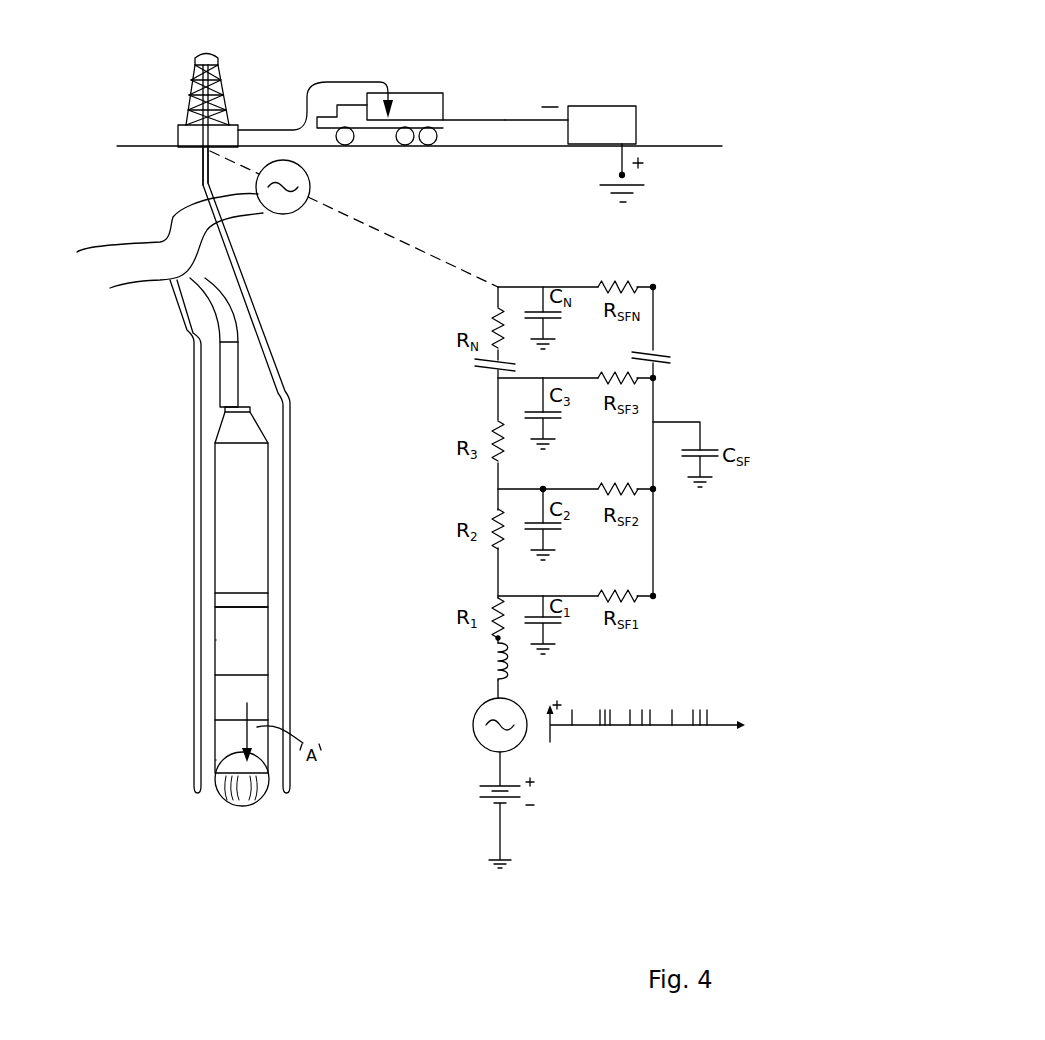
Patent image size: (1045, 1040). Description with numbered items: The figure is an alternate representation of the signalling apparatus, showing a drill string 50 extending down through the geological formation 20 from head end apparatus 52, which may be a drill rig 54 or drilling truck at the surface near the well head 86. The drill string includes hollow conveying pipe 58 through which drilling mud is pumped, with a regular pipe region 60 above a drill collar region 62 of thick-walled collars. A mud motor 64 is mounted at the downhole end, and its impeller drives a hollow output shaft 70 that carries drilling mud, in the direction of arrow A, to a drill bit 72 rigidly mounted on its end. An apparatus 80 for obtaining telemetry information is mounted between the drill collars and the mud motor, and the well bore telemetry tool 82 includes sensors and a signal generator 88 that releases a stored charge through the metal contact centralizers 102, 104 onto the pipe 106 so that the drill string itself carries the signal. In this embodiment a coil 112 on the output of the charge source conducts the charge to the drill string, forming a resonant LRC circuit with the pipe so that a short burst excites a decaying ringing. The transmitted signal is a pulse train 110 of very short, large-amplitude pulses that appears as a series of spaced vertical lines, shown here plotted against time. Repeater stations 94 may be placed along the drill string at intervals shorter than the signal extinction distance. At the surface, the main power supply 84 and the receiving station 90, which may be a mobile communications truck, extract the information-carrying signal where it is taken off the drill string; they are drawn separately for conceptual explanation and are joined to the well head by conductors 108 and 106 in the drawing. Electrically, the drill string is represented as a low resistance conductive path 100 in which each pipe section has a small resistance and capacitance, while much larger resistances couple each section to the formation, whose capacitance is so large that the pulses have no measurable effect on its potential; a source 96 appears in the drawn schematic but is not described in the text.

The geological formation 20 is at (733, 35).
The drill string 50 is at (237, 358).
The head end apparatus 52 is at (222, 80).
The drill rig 54 is at (193, 68).
The conveying pipe 58 is at (208, 287).
The regular pipe region 60 is at (230, 320).
The drill collar region 62 is at (237, 487).
The mud motor 64 is at (233, 697).
The output shaft 70 is at (230, 752).
The drill bit 72 is at (220, 788).
The apparatus for obtaining telemetry information 80 is at (233, 616).
The well bore telemetry tool 82 is at (235, 642).
The main power supply 84 is at (628, 123).
The well head 86 is at (200, 151).
The signal generator 88 is at (233, 599).
The receiving station 90 is at (410, 112).
The repeater station 94 is at (308, 167).
The battery 96 is at (535, 795).
The low resistance conductive path 100 is at (308, 92).
The metal contact centralizer 102 is at (625, 135).
The metal contact centralizer 104 is at (622, 176).
The pipe 106 is at (518, 120).
The conductor 108 is at (476, 118).
The pulse train 110 is at (660, 727).
The coil 112 is at (237, 393).